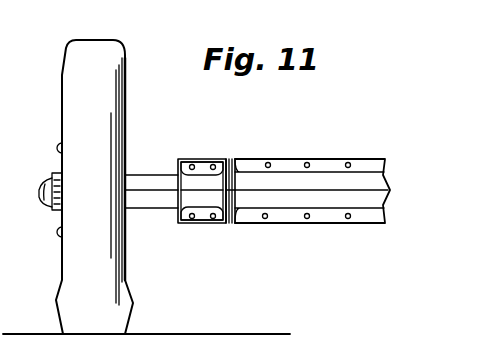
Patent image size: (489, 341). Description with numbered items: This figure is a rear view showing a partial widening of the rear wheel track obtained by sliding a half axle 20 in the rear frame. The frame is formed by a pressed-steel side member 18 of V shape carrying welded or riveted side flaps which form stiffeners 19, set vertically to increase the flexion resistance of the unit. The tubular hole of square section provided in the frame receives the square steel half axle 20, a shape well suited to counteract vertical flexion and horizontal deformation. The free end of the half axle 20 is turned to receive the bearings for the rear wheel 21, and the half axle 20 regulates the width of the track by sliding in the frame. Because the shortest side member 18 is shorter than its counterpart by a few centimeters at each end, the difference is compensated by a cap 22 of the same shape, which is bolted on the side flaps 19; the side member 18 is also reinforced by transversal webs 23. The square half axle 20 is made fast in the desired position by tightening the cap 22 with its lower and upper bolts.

The side member 18 is at (339, 173).
The stiffeners 19 is at (313, 213).
The half axle 20 is at (143, 175).
The rear wheel 21 is at (112, 83).
The cap 22 is at (200, 178).
The transversal web 23 is at (234, 183).